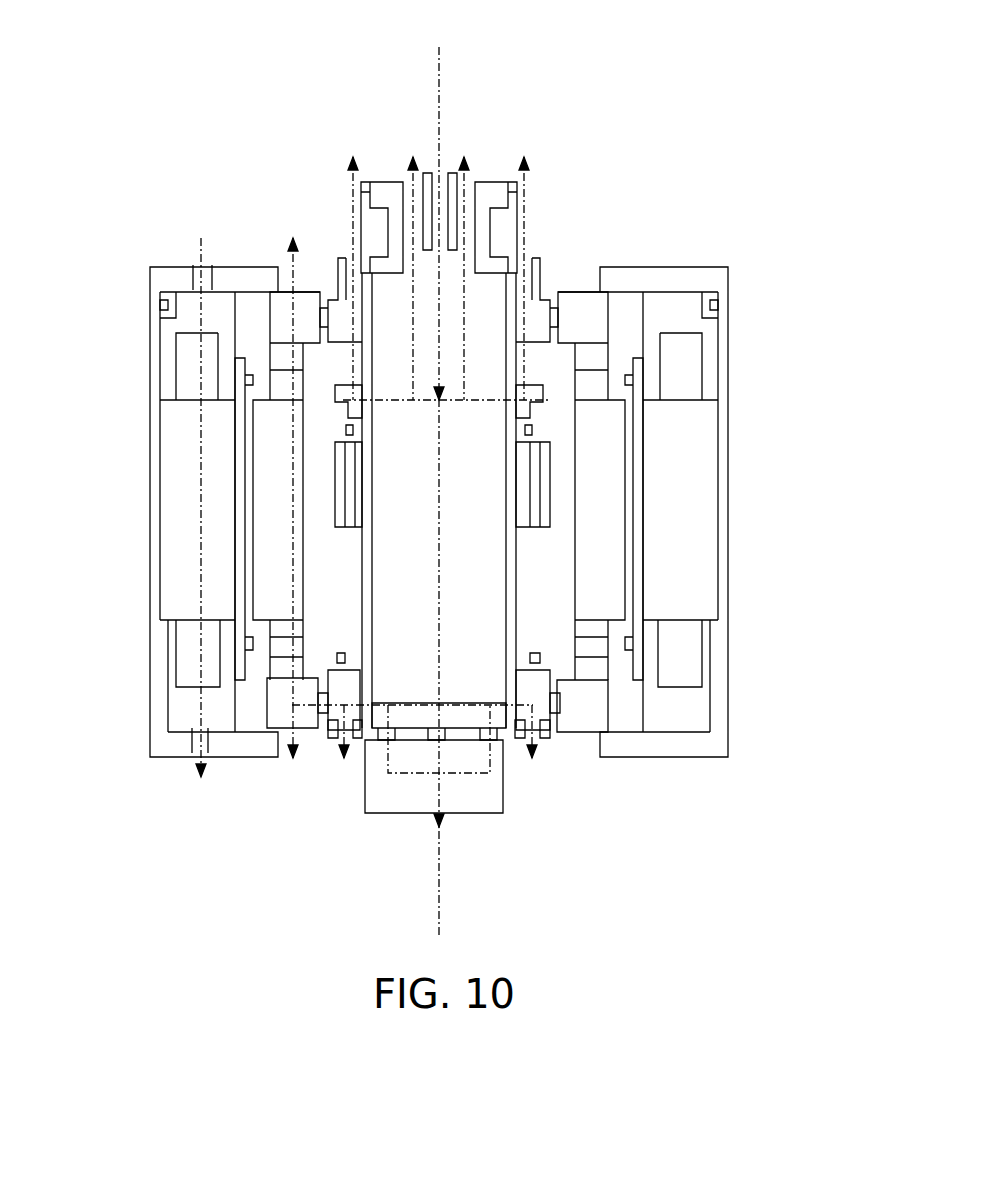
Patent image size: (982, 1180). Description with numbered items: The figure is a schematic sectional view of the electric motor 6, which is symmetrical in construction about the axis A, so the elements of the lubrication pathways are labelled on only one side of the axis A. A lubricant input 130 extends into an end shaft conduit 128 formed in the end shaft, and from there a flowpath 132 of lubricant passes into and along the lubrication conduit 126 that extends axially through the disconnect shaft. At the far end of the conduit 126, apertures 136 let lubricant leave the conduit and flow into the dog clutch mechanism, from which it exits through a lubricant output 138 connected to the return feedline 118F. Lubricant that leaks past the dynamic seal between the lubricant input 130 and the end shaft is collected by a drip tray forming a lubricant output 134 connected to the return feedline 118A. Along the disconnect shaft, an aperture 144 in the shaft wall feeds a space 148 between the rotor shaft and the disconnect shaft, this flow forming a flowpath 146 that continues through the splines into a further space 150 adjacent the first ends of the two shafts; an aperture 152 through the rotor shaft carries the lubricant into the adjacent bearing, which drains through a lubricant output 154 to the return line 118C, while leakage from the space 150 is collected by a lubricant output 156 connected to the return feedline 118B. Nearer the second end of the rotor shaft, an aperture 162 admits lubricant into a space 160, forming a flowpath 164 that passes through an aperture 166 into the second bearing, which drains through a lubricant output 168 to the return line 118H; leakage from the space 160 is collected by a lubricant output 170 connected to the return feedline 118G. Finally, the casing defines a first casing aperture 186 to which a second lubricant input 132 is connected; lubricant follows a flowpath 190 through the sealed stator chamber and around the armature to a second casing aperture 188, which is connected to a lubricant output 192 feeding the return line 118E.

The electric motor 6 is at (226, 190).
The return feedline 118A is at (414, 158).
The return feedline 118B is at (354, 158).
The return line 118C is at (294, 236).
The return line 118E is at (200, 780).
The return feedline 118F is at (440, 830).
The return feedline 118G is at (345, 760).
The return line 118H is at (293, 760).
The lubrication conduit 126 is at (480, 618).
The end shaft conduit 128 is at (453, 262).
The lubricant input 130 is at (454, 183).
The flowpath 132 is at (201, 240).
The lubricant output 134 is at (421, 183).
The apertures 136 is at (390, 712).
The lubricant output 138 is at (440, 815).
The aperture 144 is at (512, 400).
The flowpath 146 is at (297, 292).
The space 148 is at (520, 408).
The space 150 is at (340, 333).
The aperture 152 is at (336, 318).
The lubricant output 154 is at (293, 290).
The lubricant output 156 is at (344, 262).
The space 160 is at (575, 700).
The aperture 162 is at (530, 760).
The flowpath 164 is at (350, 705).
The aperture 166 is at (322, 720).
The lubricant output 168 is at (290, 730).
The lubricant output 170 is at (345, 738).
The first casing aperture 186 is at (195, 265).
The second casing aperture 188 is at (190, 741).
The flowpath 190 is at (200, 475).
The lubricant output 192 is at (200, 757).
The axis A is at (441, 72).